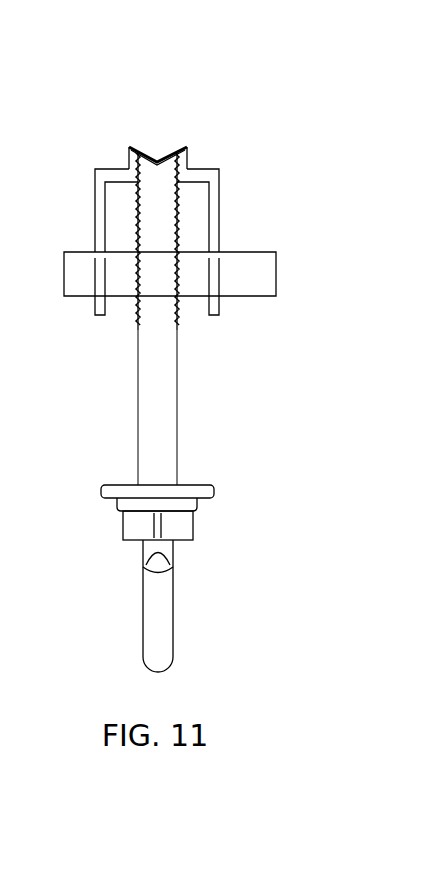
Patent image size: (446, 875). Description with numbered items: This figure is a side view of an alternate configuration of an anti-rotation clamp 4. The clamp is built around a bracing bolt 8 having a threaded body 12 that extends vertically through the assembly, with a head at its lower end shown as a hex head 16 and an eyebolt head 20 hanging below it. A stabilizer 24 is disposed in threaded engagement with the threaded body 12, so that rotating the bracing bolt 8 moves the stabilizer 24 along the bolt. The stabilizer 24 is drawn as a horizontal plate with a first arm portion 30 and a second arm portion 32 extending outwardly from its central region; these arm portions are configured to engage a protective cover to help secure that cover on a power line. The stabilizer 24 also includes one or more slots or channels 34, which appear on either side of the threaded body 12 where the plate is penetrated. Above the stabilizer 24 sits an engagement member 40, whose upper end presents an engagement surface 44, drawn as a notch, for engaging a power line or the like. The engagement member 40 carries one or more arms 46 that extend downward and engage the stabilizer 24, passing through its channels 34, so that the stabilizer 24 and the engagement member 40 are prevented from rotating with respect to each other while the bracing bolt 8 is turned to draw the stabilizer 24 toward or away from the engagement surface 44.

The anti-rotation clamp 4 is at (122, 79).
The bracing bolt 8 is at (148, 413).
The threaded body 12 is at (168, 390).
The hex head 16 is at (172, 527).
The eyebolt head 20 is at (158, 605).
The stabilizer 24 is at (124, 286).
The first arm portion 30 is at (77, 268).
The second arm portion 32 is at (253, 272).
The channel 34 is at (93, 276).
The engagement member 40 is at (128, 146).
The engagement surface 44 is at (164, 156).
The arm 46 is at (95, 222).